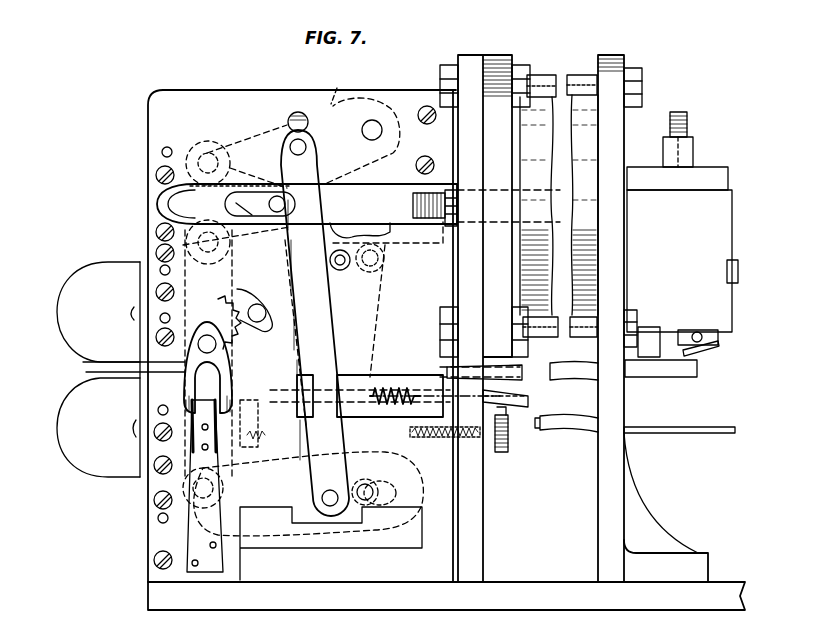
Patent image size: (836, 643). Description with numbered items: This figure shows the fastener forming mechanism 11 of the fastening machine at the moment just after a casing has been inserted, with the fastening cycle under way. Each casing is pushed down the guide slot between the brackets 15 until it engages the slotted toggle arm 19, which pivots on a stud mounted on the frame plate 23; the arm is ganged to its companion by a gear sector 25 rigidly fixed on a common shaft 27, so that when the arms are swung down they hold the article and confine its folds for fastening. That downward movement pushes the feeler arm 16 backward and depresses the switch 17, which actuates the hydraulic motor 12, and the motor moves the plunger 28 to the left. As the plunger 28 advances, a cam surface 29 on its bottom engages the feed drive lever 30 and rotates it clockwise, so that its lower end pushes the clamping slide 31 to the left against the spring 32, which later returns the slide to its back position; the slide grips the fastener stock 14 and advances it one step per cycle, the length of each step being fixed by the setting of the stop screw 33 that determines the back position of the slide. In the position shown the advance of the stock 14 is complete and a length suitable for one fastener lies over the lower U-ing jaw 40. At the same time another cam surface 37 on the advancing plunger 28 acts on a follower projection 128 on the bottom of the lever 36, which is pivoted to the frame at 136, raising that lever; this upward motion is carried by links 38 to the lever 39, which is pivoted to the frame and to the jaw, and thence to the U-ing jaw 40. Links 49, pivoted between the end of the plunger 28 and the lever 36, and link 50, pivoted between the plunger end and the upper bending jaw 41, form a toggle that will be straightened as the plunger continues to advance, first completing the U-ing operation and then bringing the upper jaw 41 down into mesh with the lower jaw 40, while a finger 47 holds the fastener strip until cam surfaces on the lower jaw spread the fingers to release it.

The fastener forming mechanism 11 is at (251, 96).
The hydraulic motor 12 is at (533, 97).
The fastener stock 14 is at (686, 420).
The brackets 15 is at (85, 388).
The feeler arm 16 is at (522, 373).
The switch 17 is at (717, 305).
The toggle arm 19 is at (208, 351).
The frame plate 23 is at (200, 100).
The gear sector 25 is at (230, 296).
The common shaft 27 is at (198, 346).
The plunger 28 is at (422, 192).
The cam surface 29 is at (350, 245).
The feed drive lever 30 is at (380, 325).
The clamping slide 31 is at (370, 380).
The spring 32 is at (398, 388).
The stop screw 33 is at (503, 452).
The lever 36 is at (291, 156).
The cam surface 37 is at (328, 190).
The links 38 is at (318, 324).
The lever 39 is at (276, 534).
The lower U-ing jaw 40 is at (150, 437).
The upper bending jaw 41 is at (178, 250).
The finger 47 is at (214, 462).
The links 49 is at (232, 160).
The link 50 is at (240, 248).
The follower projection 128 is at (358, 205).
The pivot 136 is at (382, 130).